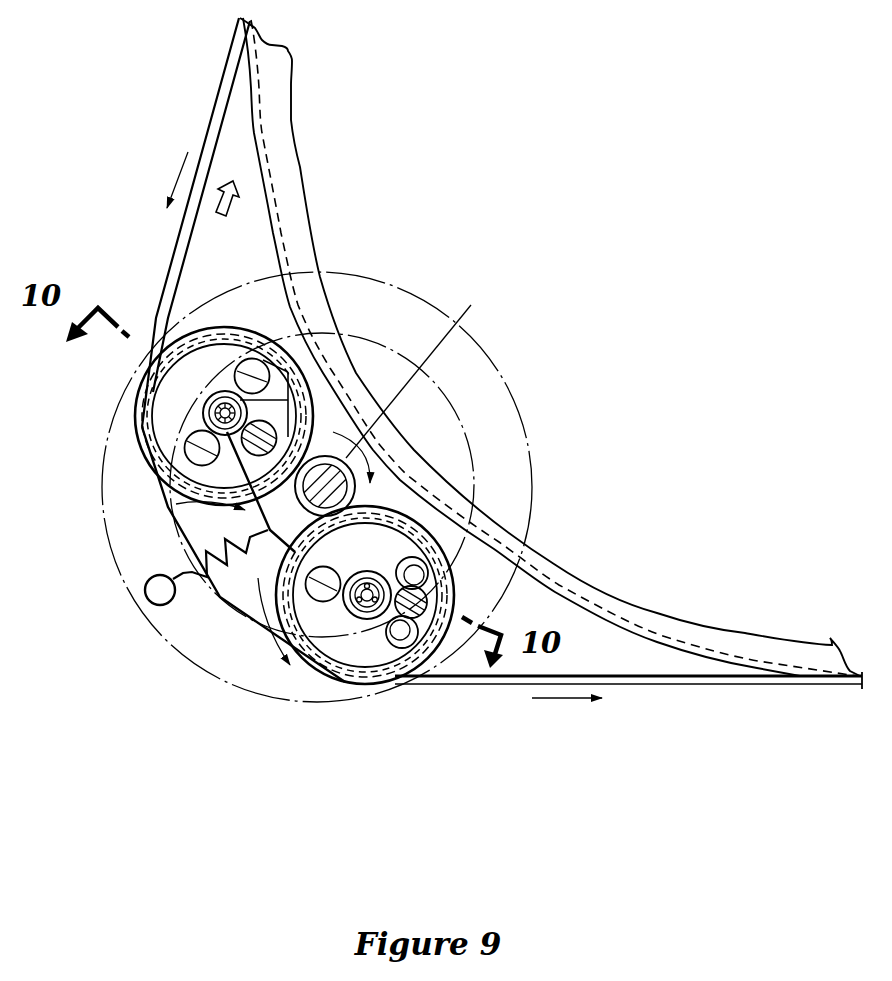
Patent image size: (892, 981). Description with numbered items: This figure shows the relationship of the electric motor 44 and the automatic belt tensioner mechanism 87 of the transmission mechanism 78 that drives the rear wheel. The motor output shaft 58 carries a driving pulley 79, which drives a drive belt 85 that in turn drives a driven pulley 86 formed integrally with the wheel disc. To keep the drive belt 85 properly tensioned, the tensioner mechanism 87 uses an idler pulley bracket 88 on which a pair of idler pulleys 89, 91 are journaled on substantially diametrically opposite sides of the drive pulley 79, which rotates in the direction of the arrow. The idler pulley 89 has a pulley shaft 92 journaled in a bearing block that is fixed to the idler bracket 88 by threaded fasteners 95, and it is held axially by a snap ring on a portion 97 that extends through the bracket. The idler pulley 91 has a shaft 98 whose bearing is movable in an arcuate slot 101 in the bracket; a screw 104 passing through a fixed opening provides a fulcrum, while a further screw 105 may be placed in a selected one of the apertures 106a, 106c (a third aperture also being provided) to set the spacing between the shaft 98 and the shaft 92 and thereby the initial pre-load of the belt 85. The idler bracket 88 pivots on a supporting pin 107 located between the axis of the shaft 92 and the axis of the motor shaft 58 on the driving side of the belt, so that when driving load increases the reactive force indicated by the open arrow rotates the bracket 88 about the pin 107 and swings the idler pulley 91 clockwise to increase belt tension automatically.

The electric motor 44 is at (508, 385).
The electric motor output shaft 58 is at (422, 366).
The transmission mechanism 78 is at (242, 612).
The driving pulley 79 is at (349, 477).
The drive belt 85 is at (518, 686).
The driven pulley 86 is at (645, 648).
The automatic tensioner mechanism 87 is at (126, 527).
The idler pulley bracket 88 is at (215, 601).
The idler pulley 89 is at (195, 333).
The idler pulley 91 is at (441, 533).
The pulley shaft 92 is at (203, 418).
The threaded fasteners 95 is at (252, 357).
The portion 97 is at (200, 422).
The shaft 98 is at (355, 635).
The arcuate slot 101 is at (366, 622).
The screw 104 is at (342, 613).
The screw 105 is at (516, 582).
The aperture 106a is at (532, 542).
The aperture 106c is at (412, 646).
The supporting pin 107 is at (298, 386).